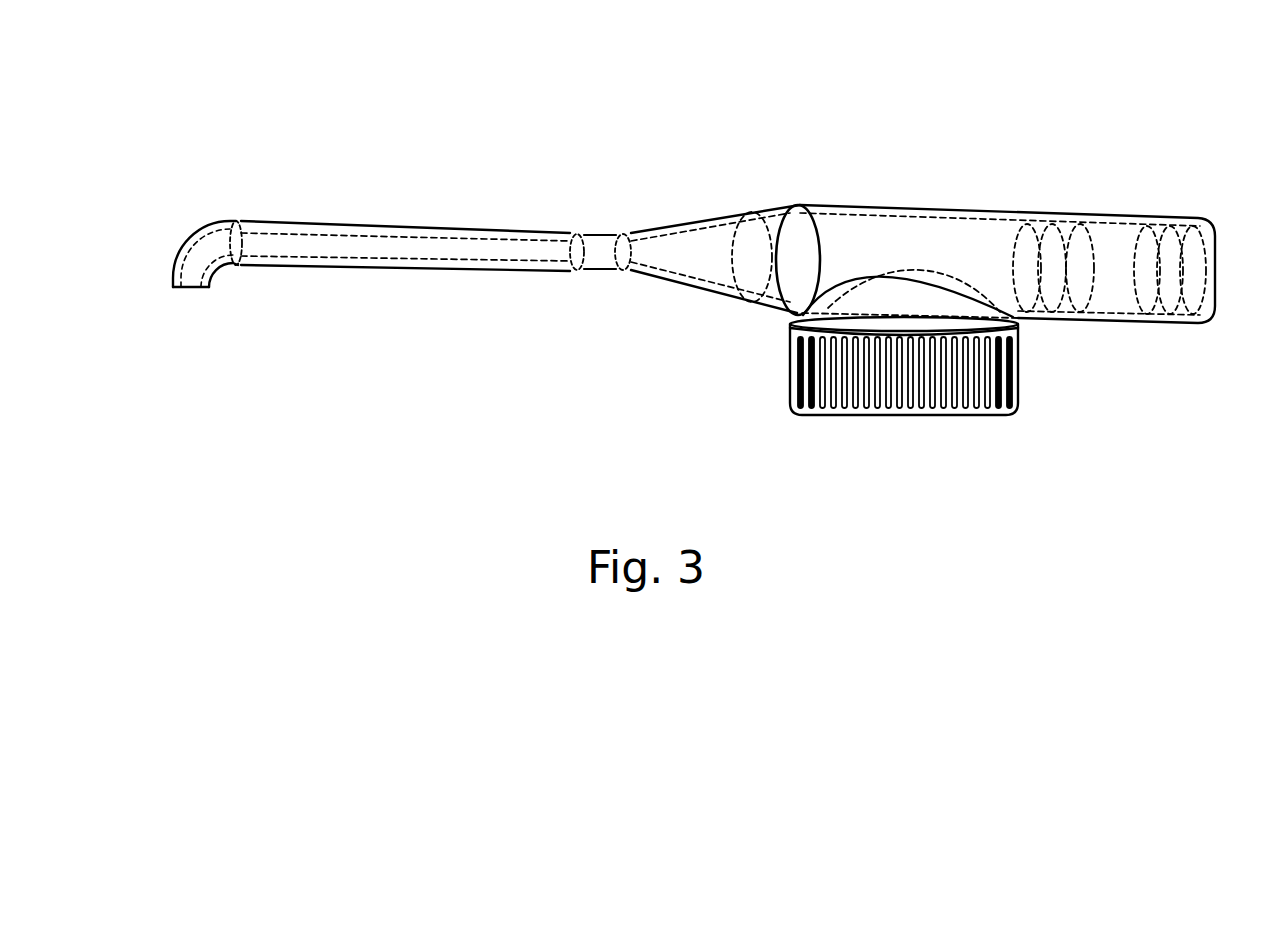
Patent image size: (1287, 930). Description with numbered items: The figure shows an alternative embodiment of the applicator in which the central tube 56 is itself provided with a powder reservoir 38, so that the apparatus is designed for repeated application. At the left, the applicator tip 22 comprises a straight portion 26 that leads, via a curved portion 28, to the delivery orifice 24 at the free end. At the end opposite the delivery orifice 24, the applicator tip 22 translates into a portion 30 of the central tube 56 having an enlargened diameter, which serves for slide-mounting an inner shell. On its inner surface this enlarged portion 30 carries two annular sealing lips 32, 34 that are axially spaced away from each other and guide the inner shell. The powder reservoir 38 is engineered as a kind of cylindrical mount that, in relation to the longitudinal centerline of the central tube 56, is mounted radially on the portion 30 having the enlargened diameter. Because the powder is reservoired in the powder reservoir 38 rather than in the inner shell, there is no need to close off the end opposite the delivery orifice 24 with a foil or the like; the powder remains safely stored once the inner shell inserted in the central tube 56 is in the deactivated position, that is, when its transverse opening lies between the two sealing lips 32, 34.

The central tube 56 is at (648, 102).
The curved portion 28 is at (203, 228).
The delivery orifice 24 is at (188, 290).
The applicator tip 22 is at (470, 225).
The straight portion 26 is at (402, 248).
The portion having an enlargened diameter 30 is at (910, 208).
The annular sealing lip 34 is at (1057, 224).
The annular sealing lip 32 is at (1162, 224).
The powder reservoir 38 is at (905, 417).